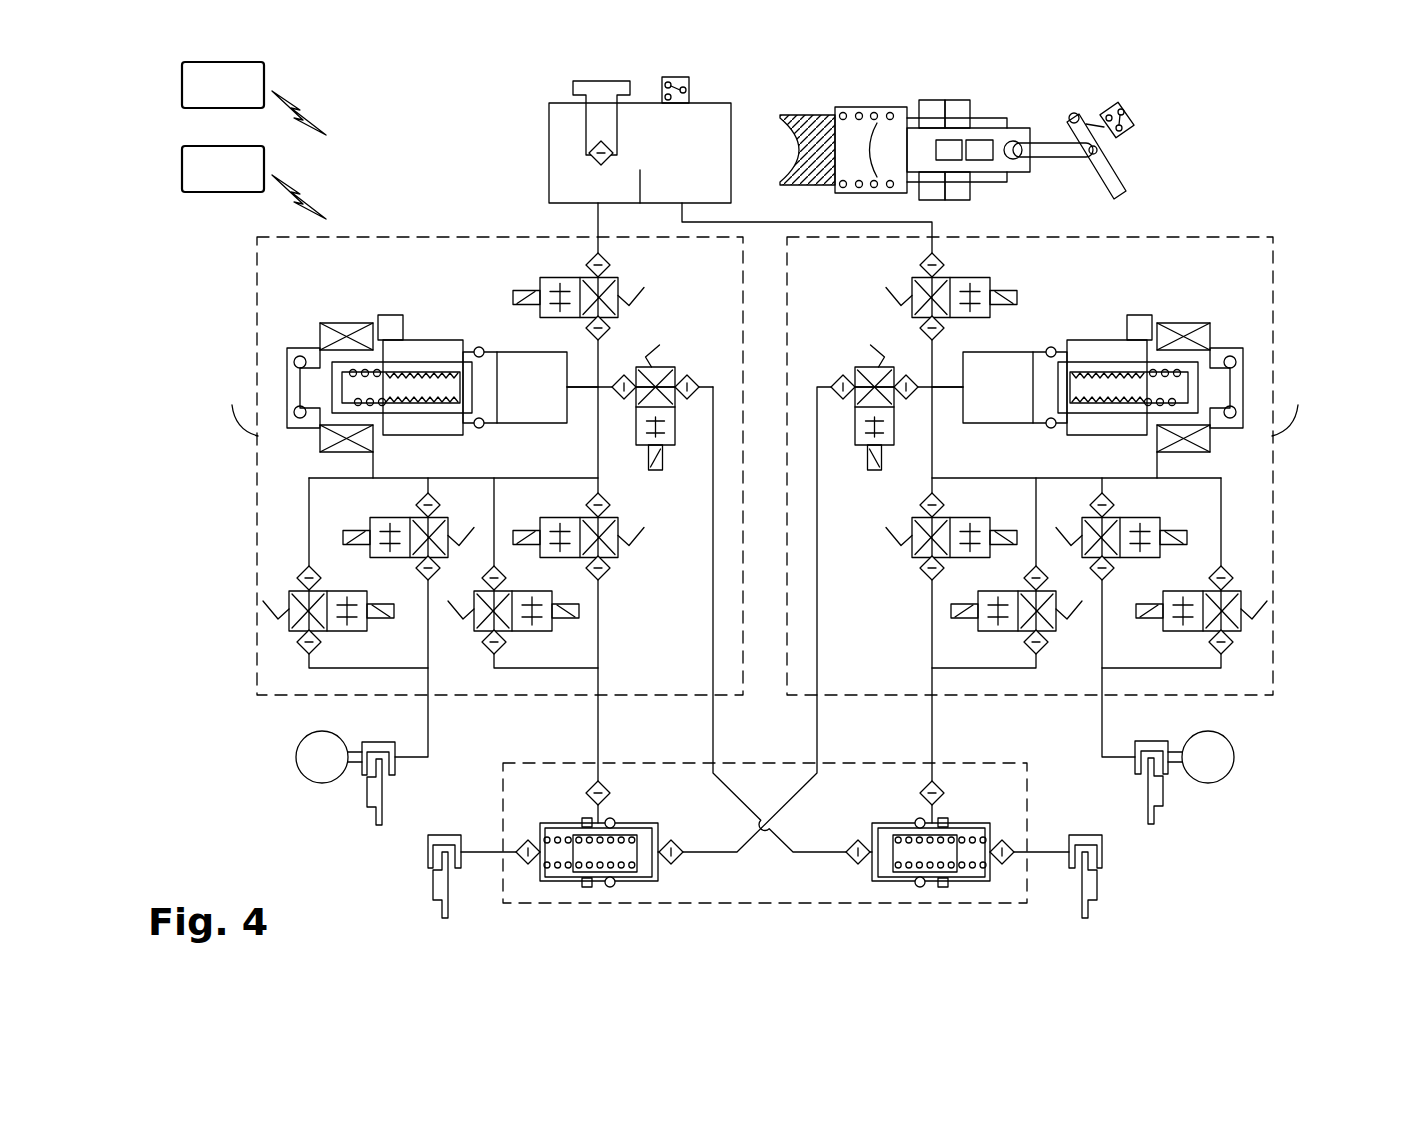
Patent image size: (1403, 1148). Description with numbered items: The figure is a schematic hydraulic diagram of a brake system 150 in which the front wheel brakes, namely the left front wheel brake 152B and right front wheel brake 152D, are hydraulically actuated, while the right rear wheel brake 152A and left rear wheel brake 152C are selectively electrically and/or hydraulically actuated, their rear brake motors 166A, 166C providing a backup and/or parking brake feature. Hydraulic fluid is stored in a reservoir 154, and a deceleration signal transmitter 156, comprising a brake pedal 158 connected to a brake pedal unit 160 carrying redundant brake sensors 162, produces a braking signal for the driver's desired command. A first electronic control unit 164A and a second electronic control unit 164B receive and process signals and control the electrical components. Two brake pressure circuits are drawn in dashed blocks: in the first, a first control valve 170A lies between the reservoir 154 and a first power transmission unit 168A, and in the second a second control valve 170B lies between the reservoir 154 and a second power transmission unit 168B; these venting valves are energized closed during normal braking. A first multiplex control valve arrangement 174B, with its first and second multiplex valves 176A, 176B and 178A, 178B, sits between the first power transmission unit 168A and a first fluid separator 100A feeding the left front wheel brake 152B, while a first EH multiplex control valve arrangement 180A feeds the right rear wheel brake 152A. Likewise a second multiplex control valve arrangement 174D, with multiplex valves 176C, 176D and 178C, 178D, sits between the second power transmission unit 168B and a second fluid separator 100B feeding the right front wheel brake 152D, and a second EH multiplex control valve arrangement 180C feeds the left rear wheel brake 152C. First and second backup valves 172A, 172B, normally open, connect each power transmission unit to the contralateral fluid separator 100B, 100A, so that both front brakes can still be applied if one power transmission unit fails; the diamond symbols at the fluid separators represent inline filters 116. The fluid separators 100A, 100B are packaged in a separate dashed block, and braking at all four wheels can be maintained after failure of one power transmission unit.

The brake system 150 is at (1262, 120).
The right rear wheel brake 152A is at (362, 745).
The left front wheel brake 152B is at (428, 848).
The left rear wheel brake 152C is at (1168, 745).
The right front wheel brake 152D is at (1102, 848).
The reservoir 154 is at (708, 101).
The deceleration signal transmitter 156 is at (905, 122).
The brake pedal 158 is at (1138, 183).
The brake pedal unit 160 is at (1050, 172).
The brake sensor 162 is at (955, 100).
The first electronic control unit 164A is at (254, 98).
The second electronic control unit 164B is at (254, 182).
The rear brake motor 166A is at (300, 770).
The rear brake motor 166C is at (1233, 766).
The first power transmission unit 168A is at (300, 328).
The second power transmission unit 168B is at (1232, 330).
The first control valve 170A is at (619, 283).
The second control valve 170B is at (990, 281).
The first backup valve 172A is at (672, 367).
The second backup valve 172B is at (855, 367).
The first multiplex control valve arrangement 174B is at (453, 497).
The second multiplex control valve arrangement 174D is at (1077, 492).
The first multiplex valve 176A is at (405, 518).
The first multiplex valve 176B is at (620, 518).
The first multiplex valve 176C is at (1128, 518).
The first multiplex valve 176D is at (948, 518).
The second multiplex valve 178A is at (330, 592).
The second multiplex valve 178B is at (525, 614).
The second multiplex valve 178C is at (1262, 624).
The second multiplex valve 178D is at (1014, 630).
The first EH multiplex control valve arrangement 180A is at (288, 609).
The second EH multiplex control valve arrangement 180C is at (1251, 589).
The first fluid separator 100A is at (600, 908).
The second fluid separator 100B is at (930, 908).
The inline filter 116 is at (683, 860).